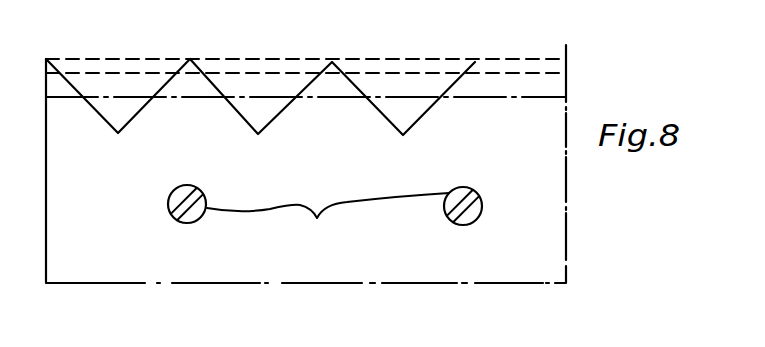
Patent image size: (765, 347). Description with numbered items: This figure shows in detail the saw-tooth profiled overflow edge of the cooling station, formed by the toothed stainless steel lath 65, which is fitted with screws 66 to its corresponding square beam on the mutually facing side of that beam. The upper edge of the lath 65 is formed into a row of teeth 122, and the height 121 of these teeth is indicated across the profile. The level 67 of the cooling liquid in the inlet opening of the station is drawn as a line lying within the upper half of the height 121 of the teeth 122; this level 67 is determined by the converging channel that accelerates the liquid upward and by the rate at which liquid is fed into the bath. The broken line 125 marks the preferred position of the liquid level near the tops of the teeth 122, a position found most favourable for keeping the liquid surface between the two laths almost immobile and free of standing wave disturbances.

The toothed stainless steel lath 65 is at (106, 260).
The screws 66 is at (325, 220).
The level of the liquid 67 is at (135, 73).
The height of the teeth 121 is at (255, 97).
The teeth 122 is at (330, 69).
The broken line 125 is at (417, 61).